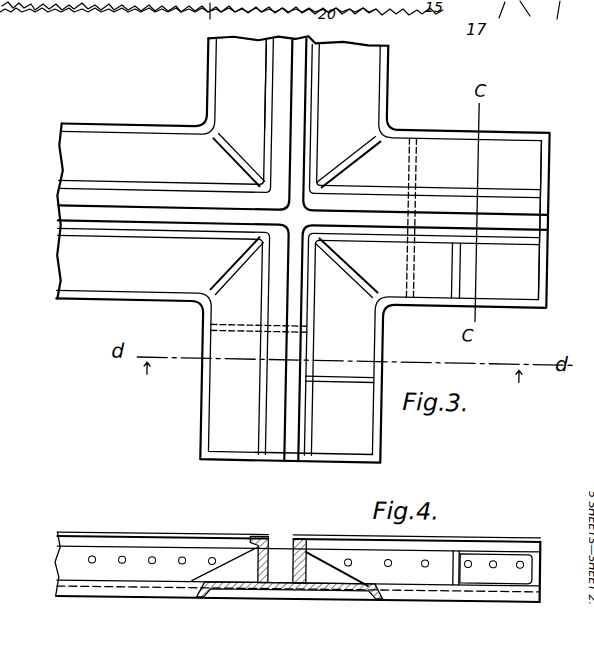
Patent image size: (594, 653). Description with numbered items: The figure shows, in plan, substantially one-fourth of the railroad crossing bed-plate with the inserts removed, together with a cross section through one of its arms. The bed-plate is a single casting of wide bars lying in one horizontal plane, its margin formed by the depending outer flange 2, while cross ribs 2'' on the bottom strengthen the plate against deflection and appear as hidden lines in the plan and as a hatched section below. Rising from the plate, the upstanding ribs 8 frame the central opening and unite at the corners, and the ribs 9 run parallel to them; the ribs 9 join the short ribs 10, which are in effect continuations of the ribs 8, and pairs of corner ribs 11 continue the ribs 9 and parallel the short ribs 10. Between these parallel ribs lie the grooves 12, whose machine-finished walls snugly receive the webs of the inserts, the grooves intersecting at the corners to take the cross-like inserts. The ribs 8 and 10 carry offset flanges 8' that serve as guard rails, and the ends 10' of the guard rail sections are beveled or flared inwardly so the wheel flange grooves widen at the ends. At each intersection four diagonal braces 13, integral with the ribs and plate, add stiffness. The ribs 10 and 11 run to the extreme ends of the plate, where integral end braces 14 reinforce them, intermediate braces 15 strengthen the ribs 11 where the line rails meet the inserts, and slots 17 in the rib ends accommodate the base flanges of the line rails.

In FIG. 3, the outer flange 2 is at (301, 248).
In FIG. 4, the outer flange 2 is at (297, 580).
In FIG. 3, the cross ribs 2'' is at (341, 234).
In FIG. 4, the cross ribs 2'' is at (289, 603).
In FIG. 3, the upstanding ribs 8 is at (248, 84).
In FIG. 4, the offset flanges 8' is at (253, 543).
In FIG. 3, the ribs 9 is at (313, 112).
In FIG. 3, the short ribs 10 is at (378, 260).
In FIG. 4, the short ribs 10 is at (230, 564).
In FIG. 3, the ends of the guard rail sections 10' is at (370, 302).
In FIG. 3, the corner ribs 11 is at (438, 236).
In FIG. 4, the corner ribs 11 is at (306, 571).
In FIG. 3, the grooves 12 is at (151, 228).
In FIG. 4, the grooves 12 is at (289, 556).
In FIG. 3, the diagonal braces 13 is at (228, 153).
In FIG. 3, the end braces 14 is at (549, 160).
In FIG. 4, the end braces 14 is at (541, 567).
In FIG. 3, the intermediate braces 15 is at (352, 384).
In FIG. 4, the intermediate braces 15 is at (455, 571).
In FIG. 4, the slots 17 is at (491, 580).